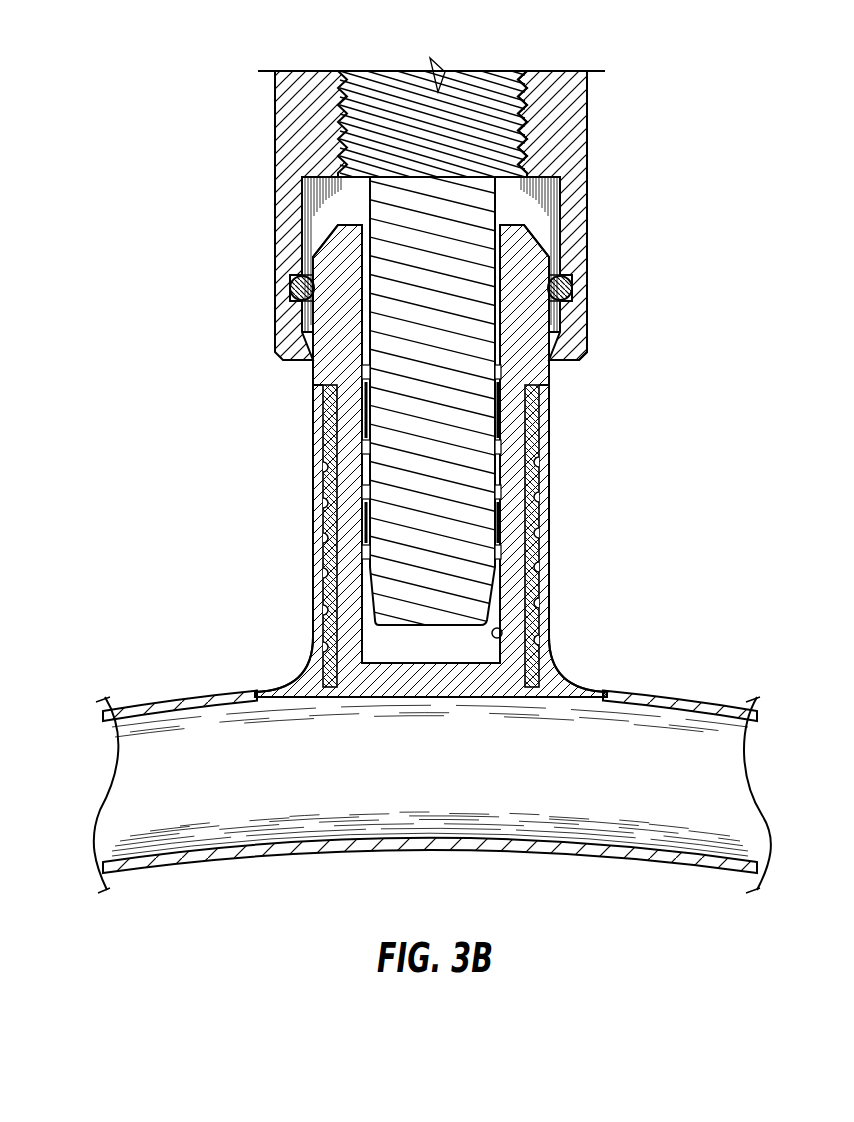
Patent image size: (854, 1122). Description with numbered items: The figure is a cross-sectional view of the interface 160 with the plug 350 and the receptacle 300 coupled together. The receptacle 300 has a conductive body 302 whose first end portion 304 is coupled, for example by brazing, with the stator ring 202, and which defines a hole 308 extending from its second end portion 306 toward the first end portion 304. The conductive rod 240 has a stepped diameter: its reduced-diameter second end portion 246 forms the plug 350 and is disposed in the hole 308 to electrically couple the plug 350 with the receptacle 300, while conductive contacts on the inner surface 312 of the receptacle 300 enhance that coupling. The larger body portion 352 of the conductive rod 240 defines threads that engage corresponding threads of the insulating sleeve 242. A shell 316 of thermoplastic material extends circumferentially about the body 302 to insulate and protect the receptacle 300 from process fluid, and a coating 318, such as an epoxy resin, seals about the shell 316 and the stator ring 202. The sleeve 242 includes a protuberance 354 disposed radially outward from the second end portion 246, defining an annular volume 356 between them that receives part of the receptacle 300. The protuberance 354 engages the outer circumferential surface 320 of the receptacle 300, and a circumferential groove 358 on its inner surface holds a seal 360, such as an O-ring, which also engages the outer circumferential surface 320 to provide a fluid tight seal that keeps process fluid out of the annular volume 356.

The interface 160 is at (189, 91).
The stator ring 202 is at (195, 855).
The conductive rod 240 is at (475, 95).
The sleeve 242 is at (275, 152).
The second end portion 246 is at (379, 404).
The receptacle 300 is at (633, 527).
The conductive body 302 is at (348, 570).
The first end portion 304 is at (451, 709).
The second end portion 306 is at (518, 216).
The hole 308 is at (365, 219).
The inner surface 312 is at (502, 630).
The shell 316 is at (312, 376).
The coating 318 is at (290, 677).
The outer circumferential surface 320 is at (320, 496).
The plug 350 is at (620, 174).
The body portion 352 is at (541, 91).
The protuberance 354 is at (597, 311).
The annular volume 356 is at (548, 198).
The circumferential groove 358 is at (303, 275).
The seal 360 is at (282, 287).